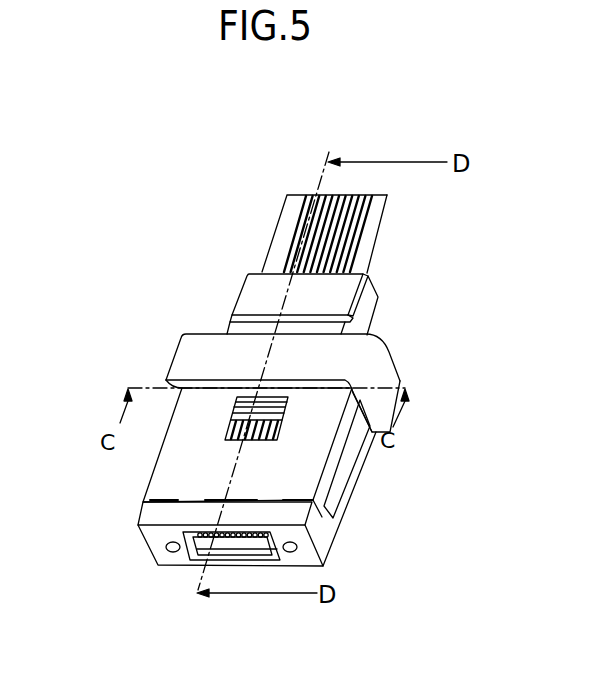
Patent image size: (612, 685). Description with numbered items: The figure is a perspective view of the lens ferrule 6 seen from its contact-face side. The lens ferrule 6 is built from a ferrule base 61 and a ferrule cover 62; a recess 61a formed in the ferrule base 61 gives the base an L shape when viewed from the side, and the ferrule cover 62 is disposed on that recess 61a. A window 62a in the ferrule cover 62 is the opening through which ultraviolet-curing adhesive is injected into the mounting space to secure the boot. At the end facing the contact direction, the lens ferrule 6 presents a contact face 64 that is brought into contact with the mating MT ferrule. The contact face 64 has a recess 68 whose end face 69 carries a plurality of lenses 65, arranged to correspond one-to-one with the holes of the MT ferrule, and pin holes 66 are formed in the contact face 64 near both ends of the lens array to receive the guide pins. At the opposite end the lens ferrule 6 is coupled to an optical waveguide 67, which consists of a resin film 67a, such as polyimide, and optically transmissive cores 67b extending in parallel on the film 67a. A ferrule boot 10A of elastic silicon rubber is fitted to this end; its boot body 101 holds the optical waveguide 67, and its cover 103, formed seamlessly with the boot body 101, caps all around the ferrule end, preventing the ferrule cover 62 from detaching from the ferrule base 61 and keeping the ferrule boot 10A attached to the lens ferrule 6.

The lens ferrule 6 is at (102, 124).
The optical waveguide 67 is at (391, 232).
The film 67a is at (378, 212).
The optical waveguide cores 67b is at (345, 205).
The boot body 101 is at (255, 297).
The ferrule boot 10A is at (388, 305).
The cover 103 is at (195, 354).
The ferrule cover 62 is at (176, 486).
The window 62a is at (232, 419).
The ferrule base 61 is at (352, 521).
The recess 61a is at (343, 452).
The contact face 64 is at (153, 530).
The recess 68 is at (202, 558).
The end face 69 is at (227, 544).
The lenses 65 is at (263, 538).
The pin holes 66 is at (173, 553).